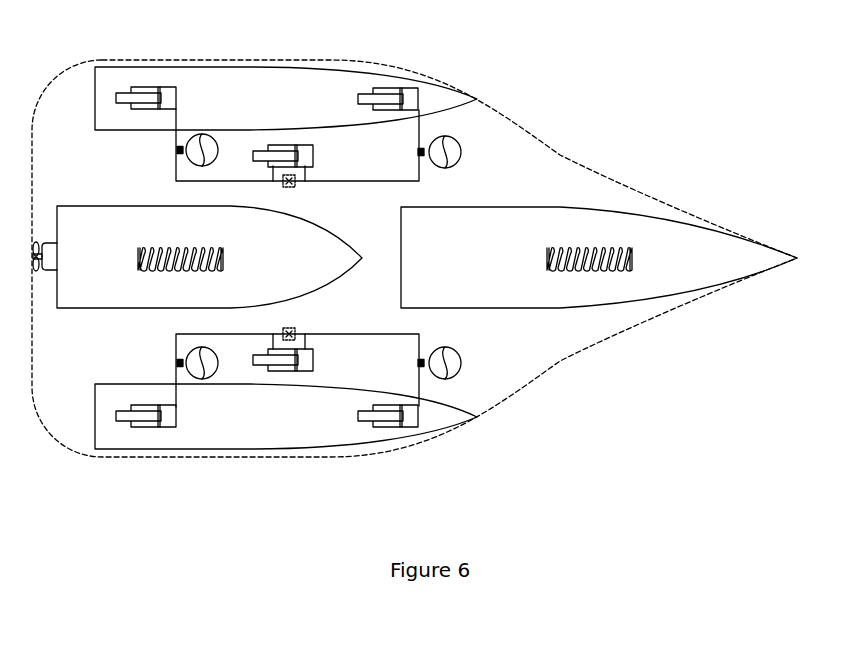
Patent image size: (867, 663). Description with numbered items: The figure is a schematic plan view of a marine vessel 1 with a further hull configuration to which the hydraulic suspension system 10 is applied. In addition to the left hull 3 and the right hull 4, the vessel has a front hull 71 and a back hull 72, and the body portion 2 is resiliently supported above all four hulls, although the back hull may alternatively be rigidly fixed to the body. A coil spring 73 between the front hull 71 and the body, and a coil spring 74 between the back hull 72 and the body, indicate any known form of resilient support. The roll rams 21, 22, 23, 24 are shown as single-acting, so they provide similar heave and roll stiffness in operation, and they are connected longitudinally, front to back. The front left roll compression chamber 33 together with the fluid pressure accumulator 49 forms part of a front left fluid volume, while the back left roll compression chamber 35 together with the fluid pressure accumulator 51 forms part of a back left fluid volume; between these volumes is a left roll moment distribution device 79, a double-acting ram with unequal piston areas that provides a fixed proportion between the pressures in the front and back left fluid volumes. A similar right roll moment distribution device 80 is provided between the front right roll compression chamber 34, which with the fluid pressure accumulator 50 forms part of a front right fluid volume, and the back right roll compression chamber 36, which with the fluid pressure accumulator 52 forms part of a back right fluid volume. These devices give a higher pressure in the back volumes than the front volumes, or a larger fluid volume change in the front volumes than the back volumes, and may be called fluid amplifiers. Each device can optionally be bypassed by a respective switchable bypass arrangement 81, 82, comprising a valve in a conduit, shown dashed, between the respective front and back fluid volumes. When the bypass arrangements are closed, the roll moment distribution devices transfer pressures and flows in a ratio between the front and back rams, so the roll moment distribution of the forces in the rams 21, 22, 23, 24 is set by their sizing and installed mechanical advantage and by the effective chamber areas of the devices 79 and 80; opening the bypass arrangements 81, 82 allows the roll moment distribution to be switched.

The marine vessel 1 is at (414, 256).
The body portion 2 is at (545, 143).
The left hull 3 is at (255, 75).
The right hull 4 is at (253, 438).
The hydraulic suspension system 10 is at (477, 381).
The front left ram 21 is at (382, 69).
The front right ram 22 is at (382, 456).
The back left ram 23 is at (120, 68).
The back right ram 24 is at (120, 456).
The front left roll compression chamber 33 is at (410, 89).
The front right roll compression chamber 34 is at (412, 428).
The back left roll compression chamber 35 is at (167, 88).
The back right roll compression chamber 36 is at (165, 428).
The fluid pressure accumulator 49 is at (451, 163).
The fluid pressure accumulator 50 is at (453, 353).
The fluid pressure accumulator 51 is at (205, 135).
The fluid pressure accumulator 52 is at (206, 380).
The front hull 71 is at (673, 285).
The back hull 72 is at (117, 217).
The coil spring 73 is at (550, 263).
The coil spring 74 is at (146, 262).
The left roll moment distribution device 79 is at (286, 140).
The right roll moment distribution device 80 is at (285, 377).
The switchable bypass arrangement 81 is at (285, 195).
The switchable bypass arrangement 82 is at (287, 325).